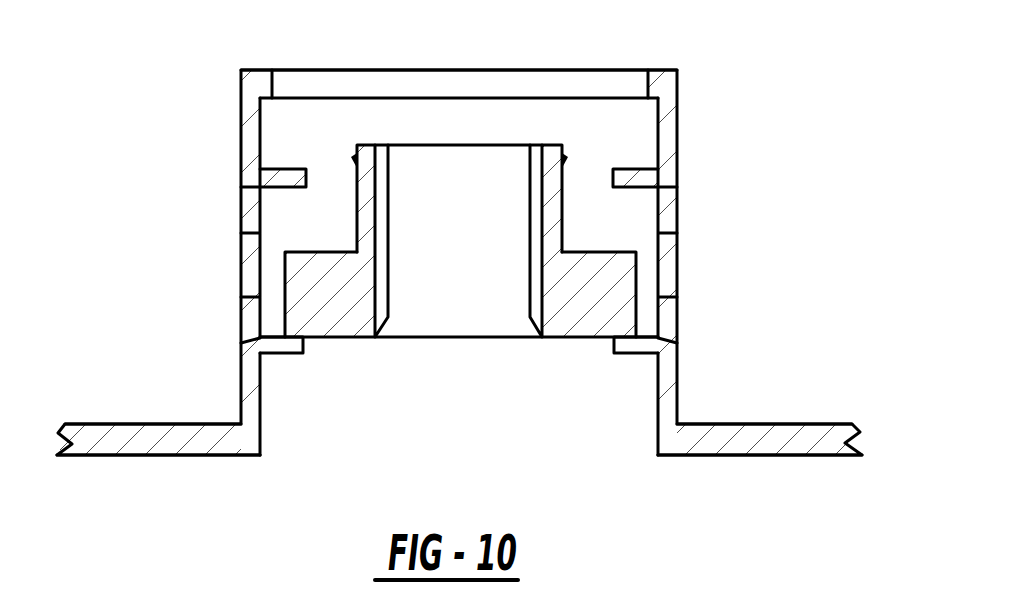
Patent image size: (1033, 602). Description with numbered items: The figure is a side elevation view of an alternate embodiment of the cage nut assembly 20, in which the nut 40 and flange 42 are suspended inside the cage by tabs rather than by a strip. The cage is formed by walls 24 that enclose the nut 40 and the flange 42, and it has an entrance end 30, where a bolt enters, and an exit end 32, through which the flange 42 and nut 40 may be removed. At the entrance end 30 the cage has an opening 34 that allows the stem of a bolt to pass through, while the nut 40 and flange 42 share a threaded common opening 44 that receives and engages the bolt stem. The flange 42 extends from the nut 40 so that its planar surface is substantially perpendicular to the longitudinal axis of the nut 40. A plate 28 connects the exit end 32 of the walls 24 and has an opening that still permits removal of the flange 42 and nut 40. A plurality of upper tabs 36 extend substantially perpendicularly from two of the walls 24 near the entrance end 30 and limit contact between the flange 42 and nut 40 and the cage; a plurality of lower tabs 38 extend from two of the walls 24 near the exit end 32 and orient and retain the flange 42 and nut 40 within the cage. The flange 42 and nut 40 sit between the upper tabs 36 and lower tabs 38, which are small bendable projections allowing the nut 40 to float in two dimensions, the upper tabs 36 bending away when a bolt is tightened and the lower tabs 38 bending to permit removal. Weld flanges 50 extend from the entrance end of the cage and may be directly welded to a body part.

The cage nut assembly 20 is at (128, 306).
The walls 24 is at (241, 112).
The plate 28 is at (272, 81).
The entrance end 30 is at (560, 389).
The exit end 32 is at (330, 118).
The opening 34 is at (458, 291).
The upper tabs 36 is at (303, 342).
The lower tabs 38 is at (275, 166).
The nut 40 is at (565, 178).
The flange 42 is at (660, 258).
The common opening 44 is at (472, 296).
The weld flanges 50 is at (112, 455).